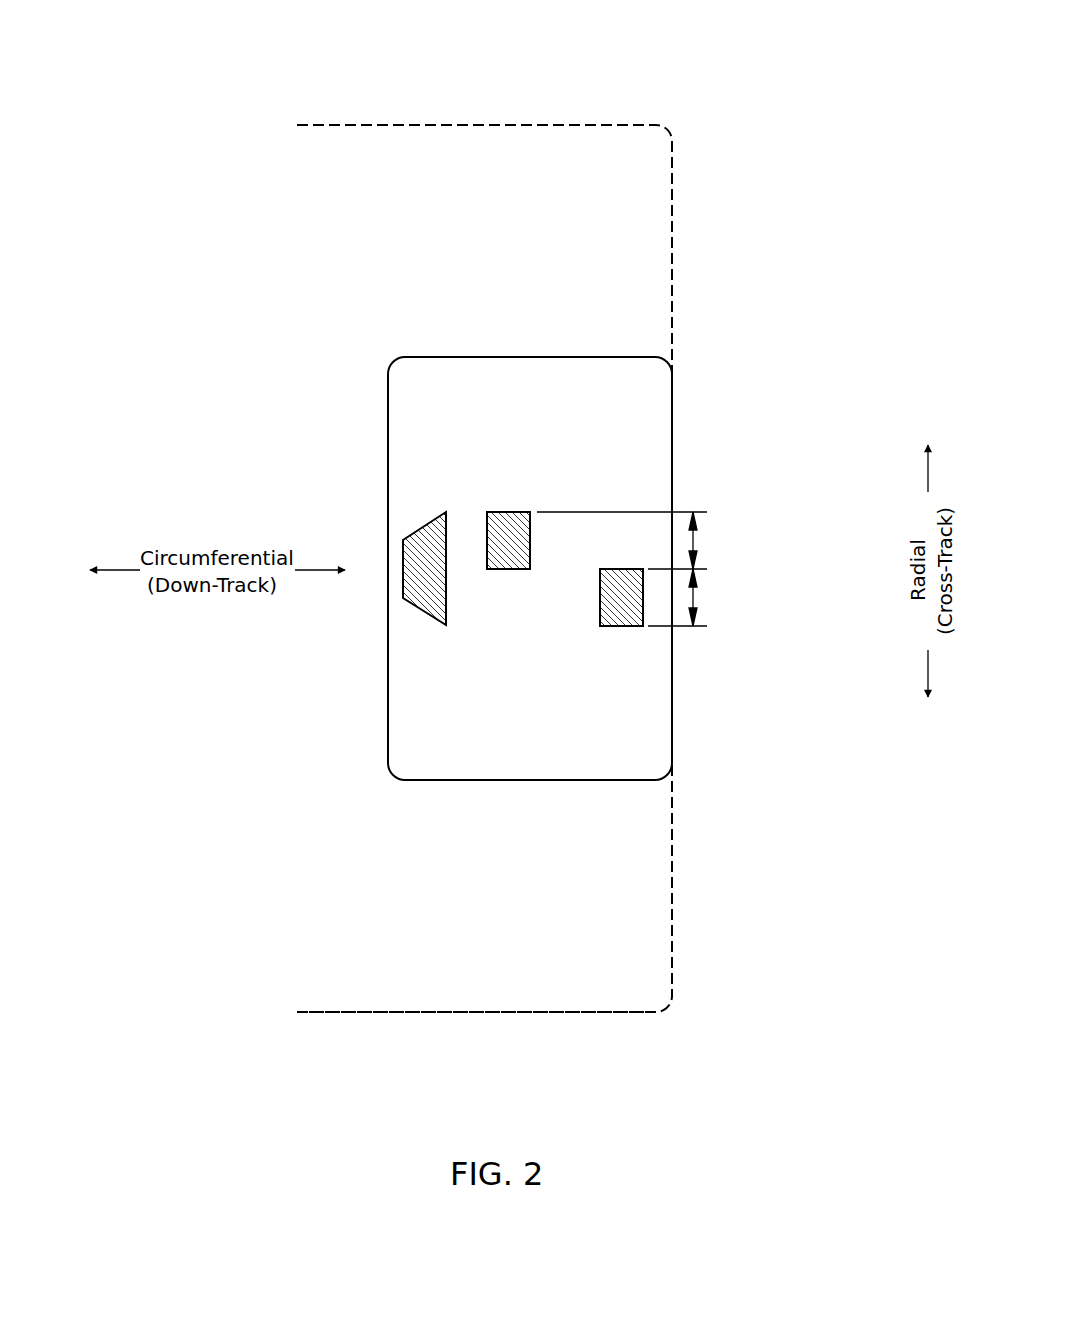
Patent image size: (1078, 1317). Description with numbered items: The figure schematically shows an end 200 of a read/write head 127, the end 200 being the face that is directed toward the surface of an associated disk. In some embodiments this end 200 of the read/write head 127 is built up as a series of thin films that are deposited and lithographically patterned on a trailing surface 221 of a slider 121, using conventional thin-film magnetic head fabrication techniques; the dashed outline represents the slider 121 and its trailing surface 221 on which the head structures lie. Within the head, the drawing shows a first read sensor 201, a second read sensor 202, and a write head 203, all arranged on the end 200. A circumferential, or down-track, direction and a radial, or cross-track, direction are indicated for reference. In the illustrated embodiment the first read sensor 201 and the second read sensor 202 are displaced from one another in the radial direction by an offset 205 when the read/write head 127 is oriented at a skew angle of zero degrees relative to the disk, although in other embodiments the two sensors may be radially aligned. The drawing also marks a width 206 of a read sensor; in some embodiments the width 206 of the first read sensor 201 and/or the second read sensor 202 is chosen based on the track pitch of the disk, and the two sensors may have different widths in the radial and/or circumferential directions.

The read/write head 127 is at (125, 63).
The end of read/write head 200 is at (687, 113).
The slider 121 is at (395, 1012).
The trailing surface 221 is at (672, 928).
The first read sensor 201 is at (622, 626).
The second read sensor 202 is at (508, 512).
The write head 203 is at (425, 523).
The offset 205 is at (694, 541).
The width 206 is at (694, 597).